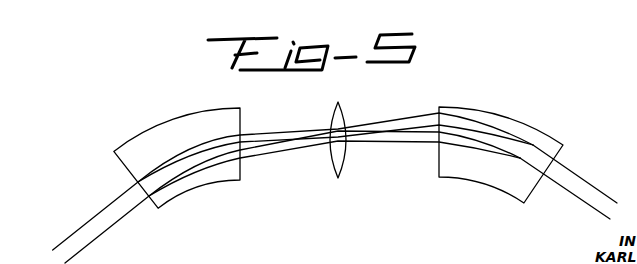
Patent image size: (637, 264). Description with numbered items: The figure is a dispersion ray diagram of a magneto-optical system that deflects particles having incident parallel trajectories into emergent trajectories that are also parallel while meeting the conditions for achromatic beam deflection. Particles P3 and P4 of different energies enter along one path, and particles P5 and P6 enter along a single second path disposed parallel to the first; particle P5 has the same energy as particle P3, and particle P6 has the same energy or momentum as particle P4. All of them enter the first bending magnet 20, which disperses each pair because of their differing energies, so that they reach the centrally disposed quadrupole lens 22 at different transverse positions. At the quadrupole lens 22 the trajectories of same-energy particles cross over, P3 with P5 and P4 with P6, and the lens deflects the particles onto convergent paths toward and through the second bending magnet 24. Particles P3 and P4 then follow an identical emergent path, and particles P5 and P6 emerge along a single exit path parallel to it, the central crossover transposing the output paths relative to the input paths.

The first bending magnet 20 is at (165, 124).
The quadrupole lens 22 is at (340, 116).
The second bending magnet 24 is at (507, 118).
The particle P3 is at (252, 148).
The particle P4 is at (285, 131).
The particle P5 is at (280, 158).
The particle P6 is at (253, 153).